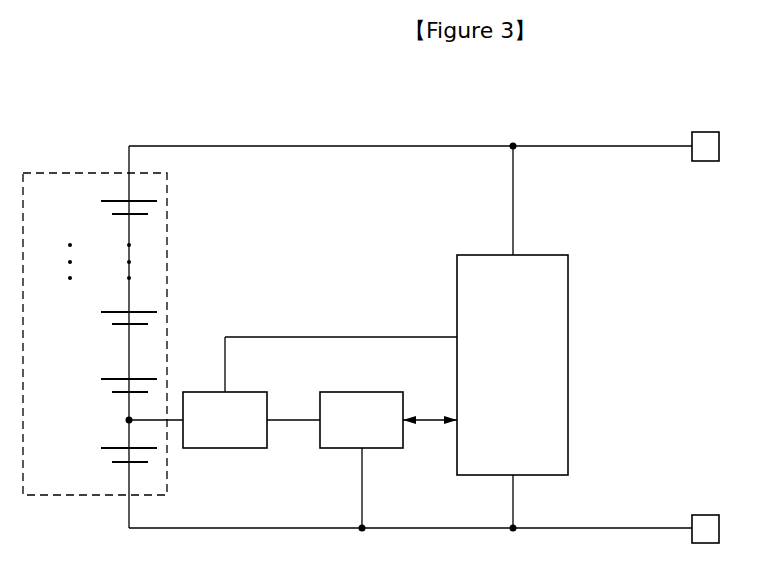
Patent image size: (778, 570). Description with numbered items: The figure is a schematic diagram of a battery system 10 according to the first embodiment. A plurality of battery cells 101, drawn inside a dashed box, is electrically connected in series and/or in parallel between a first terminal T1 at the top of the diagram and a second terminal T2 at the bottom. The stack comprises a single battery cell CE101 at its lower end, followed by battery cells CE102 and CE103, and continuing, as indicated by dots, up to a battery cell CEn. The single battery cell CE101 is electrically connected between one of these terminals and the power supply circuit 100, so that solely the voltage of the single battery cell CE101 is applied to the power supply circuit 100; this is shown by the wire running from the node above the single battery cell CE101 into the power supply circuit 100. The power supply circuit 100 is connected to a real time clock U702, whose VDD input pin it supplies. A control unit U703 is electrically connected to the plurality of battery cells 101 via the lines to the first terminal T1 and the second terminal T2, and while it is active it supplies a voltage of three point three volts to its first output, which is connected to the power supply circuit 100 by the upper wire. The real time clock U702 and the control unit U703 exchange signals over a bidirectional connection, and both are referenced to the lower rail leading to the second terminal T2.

The battery system 10 is at (400, 108).
The plurality of battery cells 101 is at (72, 173).
The power supply circuit 100 is at (225, 420).
The real time clock U702 is at (361, 420).
The control unit U703 is at (512, 365).
The battery cell CEn is at (104, 210).
The single battery cell CE101 is at (100, 457).
The battery cell CE102 is at (100, 388).
The battery cell CE103 is at (100, 321).
The first terminal T1 is at (718, 146).
The second terminal T2 is at (718, 529).